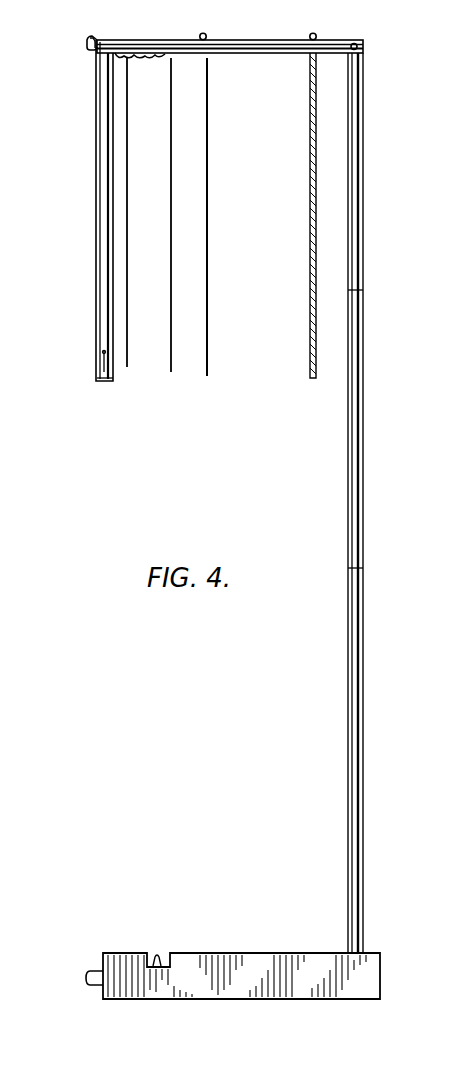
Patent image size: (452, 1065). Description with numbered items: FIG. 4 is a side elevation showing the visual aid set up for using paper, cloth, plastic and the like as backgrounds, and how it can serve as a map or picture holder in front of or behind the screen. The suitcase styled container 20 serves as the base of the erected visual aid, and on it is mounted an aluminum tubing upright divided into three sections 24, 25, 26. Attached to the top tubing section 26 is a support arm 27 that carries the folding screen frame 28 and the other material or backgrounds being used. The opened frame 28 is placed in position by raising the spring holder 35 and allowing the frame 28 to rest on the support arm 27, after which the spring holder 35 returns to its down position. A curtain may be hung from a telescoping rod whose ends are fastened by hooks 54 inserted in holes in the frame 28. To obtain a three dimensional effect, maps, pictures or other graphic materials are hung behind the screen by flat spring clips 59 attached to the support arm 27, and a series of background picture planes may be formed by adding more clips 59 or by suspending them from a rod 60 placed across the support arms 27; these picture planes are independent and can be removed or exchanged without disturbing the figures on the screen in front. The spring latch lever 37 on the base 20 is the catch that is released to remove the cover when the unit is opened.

The suitcase styled container 20 is at (268, 1004).
The tubing section 24 is at (373, 760).
The tubing section 25 is at (372, 429).
The tubing section 26 is at (367, 192).
The support arm 27 is at (230, 65).
The folding screen frame 28 is at (64, 203).
The spring holder 35 is at (87, 45).
The spring latch lever 37 is at (175, 946).
The hook 54 is at (103, 217).
The flat spring clip 59 is at (150, 60).
The rod 60 is at (207, 34).